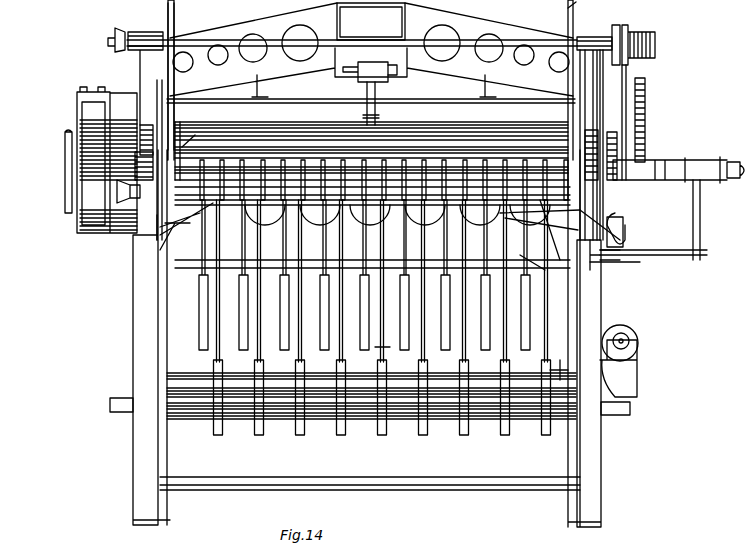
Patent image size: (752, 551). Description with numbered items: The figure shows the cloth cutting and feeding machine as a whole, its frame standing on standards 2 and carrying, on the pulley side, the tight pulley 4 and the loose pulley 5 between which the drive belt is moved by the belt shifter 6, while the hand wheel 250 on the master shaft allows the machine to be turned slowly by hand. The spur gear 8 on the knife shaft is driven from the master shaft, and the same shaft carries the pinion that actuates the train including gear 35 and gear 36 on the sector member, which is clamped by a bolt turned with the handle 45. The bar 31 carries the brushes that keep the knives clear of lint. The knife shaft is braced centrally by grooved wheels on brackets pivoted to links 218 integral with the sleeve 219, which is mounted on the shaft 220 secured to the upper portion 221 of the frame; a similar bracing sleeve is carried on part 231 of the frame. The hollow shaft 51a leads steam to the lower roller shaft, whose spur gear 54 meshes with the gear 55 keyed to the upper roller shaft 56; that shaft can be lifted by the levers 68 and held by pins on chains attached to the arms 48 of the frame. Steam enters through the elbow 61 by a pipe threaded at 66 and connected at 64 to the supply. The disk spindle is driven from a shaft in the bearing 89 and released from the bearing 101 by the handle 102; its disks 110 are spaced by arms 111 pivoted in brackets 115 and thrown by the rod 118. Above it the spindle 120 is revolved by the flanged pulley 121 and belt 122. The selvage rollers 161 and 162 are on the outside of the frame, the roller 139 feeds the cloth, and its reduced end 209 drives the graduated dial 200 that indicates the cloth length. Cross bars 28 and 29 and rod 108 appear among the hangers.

The standard 2 is at (142, 447).
The tight pulley 4 is at (143, 232).
The loose pulley 5 is at (88, 225).
The belt shifter 6 is at (490, 135).
The spur gear 8 is at (645, 105).
The rod 28 is at (376, 348).
The hanger bar 29 is at (280, 350).
The bar 31 is at (641, 213).
The gear 35 is at (643, 143).
The gear 36 is at (633, 165).
The handle 45 is at (660, 267).
The arm of frame 48 is at (152, 68).
The hollow shaft 51a is at (437, 167).
The spur gear 54 is at (183, 143).
The gear 55 is at (178, 128).
The shaft 56 is at (230, 133).
The elbow 61 is at (712, 157).
The steam connection 64 is at (700, 190).
The threaded connection 66 is at (568, 8).
The lever 68 is at (175, 14).
The bearing 89 is at (587, 67).
The bearing 101 is at (143, 34).
The handle 102 is at (110, 43).
The rod 108 is at (657, 56).
The disk 110 is at (322, 170).
The arm 111 is at (290, 177).
The bracket 115 is at (160, 223).
The rod 118 is at (197, 222).
The spindle 120 is at (352, 40).
The flanged pulley 121 is at (657, 40).
The belt 122 is at (627, 73).
The roller 139 is at (408, 380).
The selvage roller 161 is at (137, 170).
The upper selvage roller 162 is at (150, 140).
The graduated dial 200 is at (637, 343).
The extended reduced end of roller 209 is at (568, 377).
The link 218 is at (380, 110).
The sleeve 219 is at (358, 78).
The shaft 220 is at (390, 78).
The upper portion of frame 221 is at (488, 40).
The part of frame 231 is at (530, 268).
The hand wheel 250 is at (72, 190).